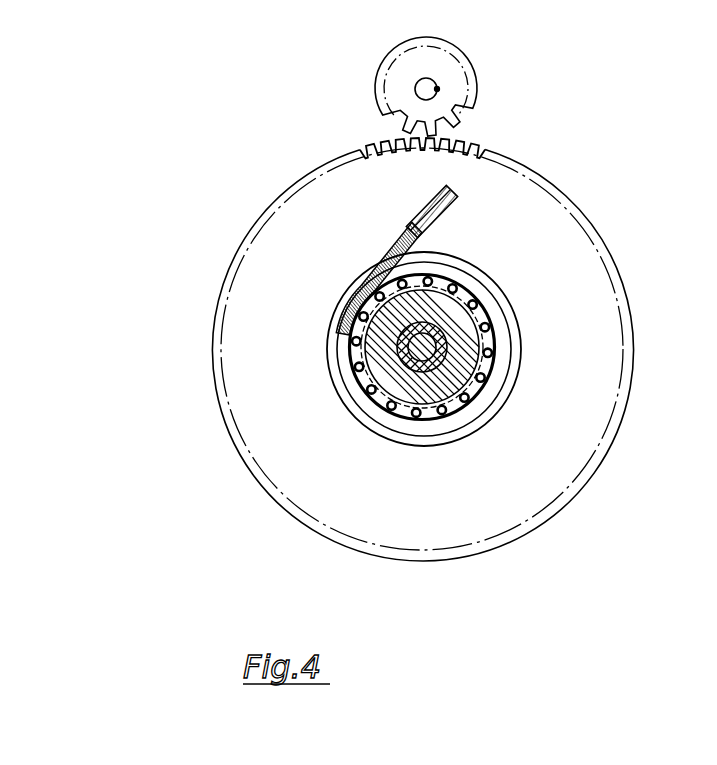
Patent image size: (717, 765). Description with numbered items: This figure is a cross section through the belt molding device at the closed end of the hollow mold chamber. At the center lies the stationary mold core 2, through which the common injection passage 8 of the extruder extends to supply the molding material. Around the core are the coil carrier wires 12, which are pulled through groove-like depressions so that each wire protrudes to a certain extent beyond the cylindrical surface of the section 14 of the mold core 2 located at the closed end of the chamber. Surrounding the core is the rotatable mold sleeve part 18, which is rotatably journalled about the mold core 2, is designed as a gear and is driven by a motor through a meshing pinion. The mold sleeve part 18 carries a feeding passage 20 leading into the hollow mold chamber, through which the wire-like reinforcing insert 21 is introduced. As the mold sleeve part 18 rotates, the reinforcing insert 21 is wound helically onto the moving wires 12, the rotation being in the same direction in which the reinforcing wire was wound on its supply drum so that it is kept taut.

The mold core 2 is at (467, 378).
The common injection passage 8 is at (423, 349).
The coil carrier wire 12 is at (350, 388).
The section of the mold core 14 is at (357, 330).
The mold sleeve part 18 is at (578, 260).
The feeding passage 20 is at (384, 264).
The reinforcing insert 21 is at (420, 237).